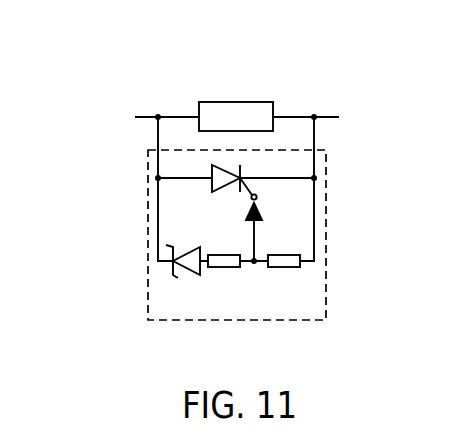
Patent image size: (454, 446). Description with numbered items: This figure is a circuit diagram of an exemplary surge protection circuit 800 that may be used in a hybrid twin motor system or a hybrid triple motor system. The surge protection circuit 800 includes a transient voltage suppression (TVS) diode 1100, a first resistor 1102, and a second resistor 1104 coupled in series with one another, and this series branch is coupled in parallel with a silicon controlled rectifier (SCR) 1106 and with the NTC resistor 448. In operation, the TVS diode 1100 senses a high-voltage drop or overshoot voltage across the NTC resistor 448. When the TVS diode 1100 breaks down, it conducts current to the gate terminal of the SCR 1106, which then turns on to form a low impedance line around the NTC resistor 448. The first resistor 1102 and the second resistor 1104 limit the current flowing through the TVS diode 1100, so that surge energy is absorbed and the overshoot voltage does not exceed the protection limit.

The negative temperature coefficient (NTC) resistor 448 is at (268, 102).
The surge protection circuit 800 is at (326, 165).
The silicon controlled rectifier (SCR) 1106 is at (212, 172).
The first resistor 1102 is at (210, 255).
The second resistor 1104 is at (297, 255).
The transient voltage suppression (TVS) diode 1100 is at (170, 269).